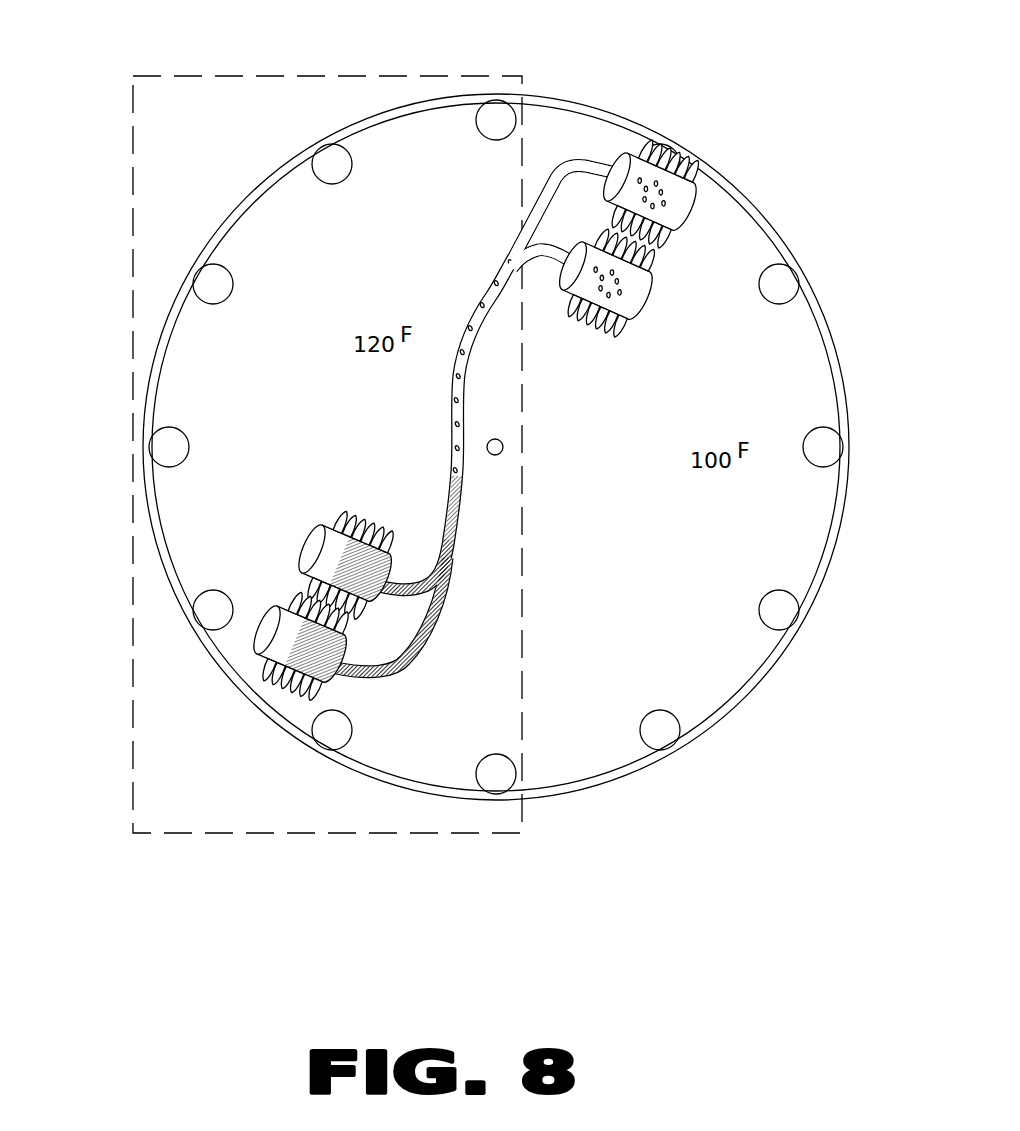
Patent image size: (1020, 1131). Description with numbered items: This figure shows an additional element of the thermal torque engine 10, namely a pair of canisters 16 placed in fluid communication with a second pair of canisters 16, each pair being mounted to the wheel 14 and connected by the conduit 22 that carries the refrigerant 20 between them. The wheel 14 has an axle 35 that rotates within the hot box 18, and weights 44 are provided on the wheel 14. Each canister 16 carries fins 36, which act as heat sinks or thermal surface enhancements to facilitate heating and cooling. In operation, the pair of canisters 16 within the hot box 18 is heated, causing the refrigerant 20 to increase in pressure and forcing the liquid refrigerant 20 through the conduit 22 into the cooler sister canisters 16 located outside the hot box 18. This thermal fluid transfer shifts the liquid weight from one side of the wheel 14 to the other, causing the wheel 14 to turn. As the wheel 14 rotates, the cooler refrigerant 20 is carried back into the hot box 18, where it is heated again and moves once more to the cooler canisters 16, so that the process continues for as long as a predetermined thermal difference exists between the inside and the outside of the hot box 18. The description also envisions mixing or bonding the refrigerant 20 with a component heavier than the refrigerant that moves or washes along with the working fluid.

The thermal torque engine 10 is at (692, 108).
The wheel 14 is at (735, 190).
The canister 16 is at (643, 293).
The hot box 18 is at (133, 242).
The refrigerant 20 is at (328, 679).
The conduit 22 is at (455, 432).
The axle 35 is at (500, 452).
The fin 36 is at (633, 145).
The weight 44 is at (660, 722).